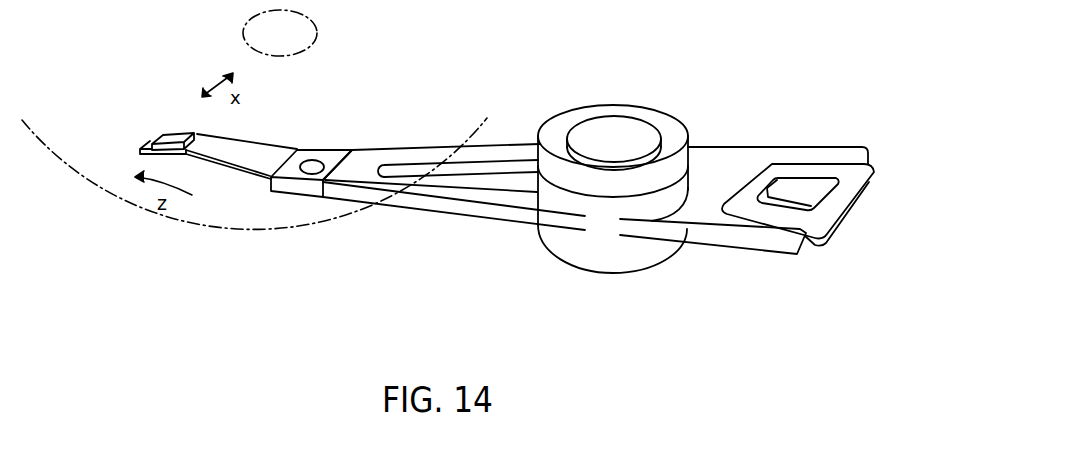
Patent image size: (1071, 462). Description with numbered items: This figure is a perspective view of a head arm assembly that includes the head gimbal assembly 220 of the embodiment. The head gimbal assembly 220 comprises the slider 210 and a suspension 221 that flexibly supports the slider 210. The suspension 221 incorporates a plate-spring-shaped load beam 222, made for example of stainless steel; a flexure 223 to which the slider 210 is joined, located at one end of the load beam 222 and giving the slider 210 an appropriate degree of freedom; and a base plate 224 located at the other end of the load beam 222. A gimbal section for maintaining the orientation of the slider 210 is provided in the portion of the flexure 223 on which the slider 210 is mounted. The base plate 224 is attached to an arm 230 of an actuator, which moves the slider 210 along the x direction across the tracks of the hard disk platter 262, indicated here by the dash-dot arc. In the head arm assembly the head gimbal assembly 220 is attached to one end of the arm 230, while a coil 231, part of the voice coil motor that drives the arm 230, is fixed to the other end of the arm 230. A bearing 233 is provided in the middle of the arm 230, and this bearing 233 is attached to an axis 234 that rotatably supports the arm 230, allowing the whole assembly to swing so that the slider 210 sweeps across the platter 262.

The slider 210 is at (176, 138).
The head gimbal assembly 220 is at (263, 198).
The suspension 221 is at (259, 141).
The load beam 222 is at (278, 153).
The flexure 223 is at (150, 146).
The base plate 224 is at (341, 150).
The arm 230 is at (420, 204).
The coil 231 is at (852, 215).
The bearing 233 is at (559, 127).
The axis 234 is at (625, 128).
The hard disk platter 262 is at (185, 220).